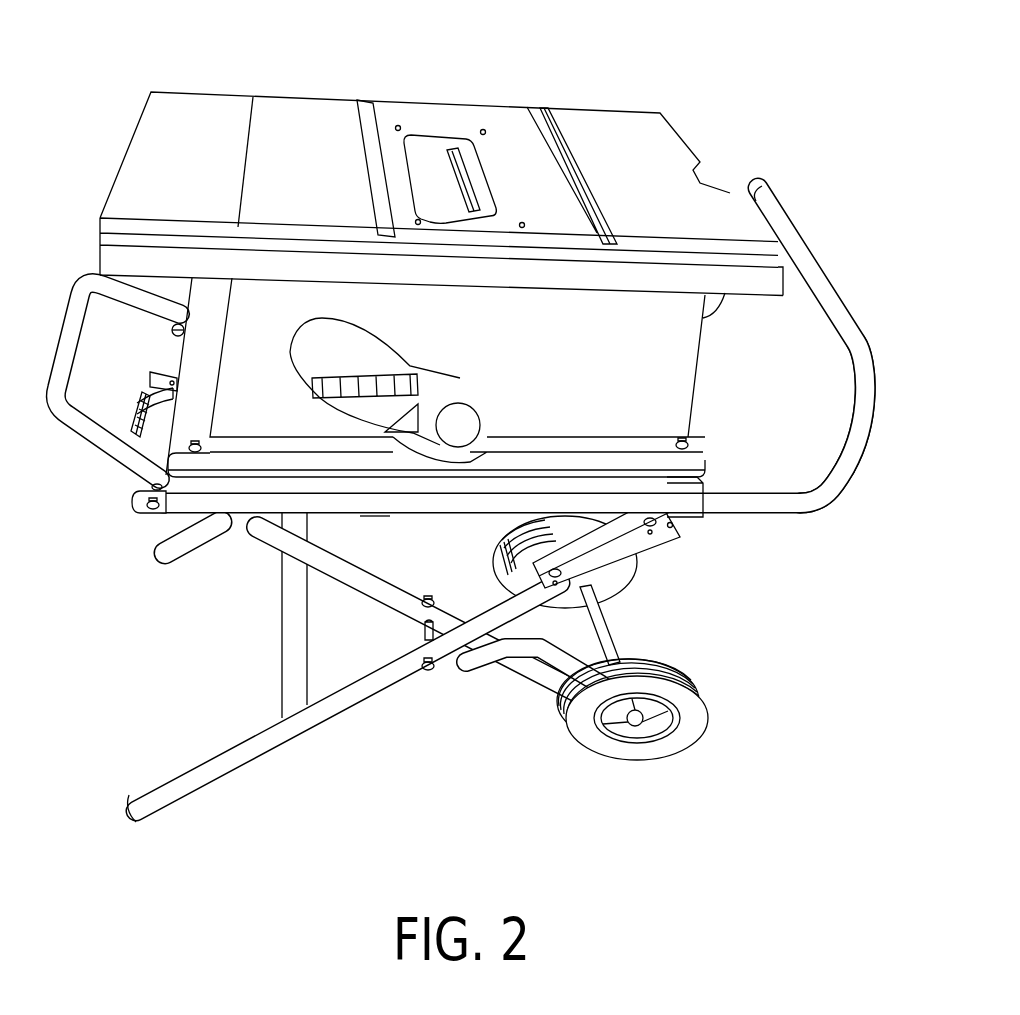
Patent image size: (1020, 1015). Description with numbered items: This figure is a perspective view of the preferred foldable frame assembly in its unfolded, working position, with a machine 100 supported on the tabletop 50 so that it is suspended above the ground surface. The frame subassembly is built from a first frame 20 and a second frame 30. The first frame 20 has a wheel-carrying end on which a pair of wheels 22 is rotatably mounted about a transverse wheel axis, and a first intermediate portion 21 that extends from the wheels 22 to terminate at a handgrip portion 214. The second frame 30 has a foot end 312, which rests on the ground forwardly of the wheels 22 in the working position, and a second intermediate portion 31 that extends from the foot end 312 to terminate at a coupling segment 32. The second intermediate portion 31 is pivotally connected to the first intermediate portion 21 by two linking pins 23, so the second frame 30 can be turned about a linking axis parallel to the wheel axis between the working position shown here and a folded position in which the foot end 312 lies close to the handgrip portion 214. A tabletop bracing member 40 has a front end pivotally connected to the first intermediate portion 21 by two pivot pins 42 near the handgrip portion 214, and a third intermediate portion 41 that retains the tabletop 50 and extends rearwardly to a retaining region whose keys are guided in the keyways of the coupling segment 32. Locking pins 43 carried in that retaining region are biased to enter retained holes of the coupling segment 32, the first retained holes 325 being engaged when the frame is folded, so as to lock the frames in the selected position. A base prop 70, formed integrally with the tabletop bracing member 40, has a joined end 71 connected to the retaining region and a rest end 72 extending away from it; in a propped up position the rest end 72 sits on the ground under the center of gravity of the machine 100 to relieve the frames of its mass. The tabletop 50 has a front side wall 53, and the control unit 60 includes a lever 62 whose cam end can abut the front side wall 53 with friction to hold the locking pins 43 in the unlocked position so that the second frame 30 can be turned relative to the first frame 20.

The machine 100 is at (620, 115).
The handgrip portion 214 is at (72, 308).
The control unit 60 is at (147, 380).
The lever 62 is at (133, 418).
The front side wall 53 is at (133, 455).
The pivot pins 42 is at (155, 514).
The first intermediate portion 21 is at (335, 570).
The tabletop 50 is at (373, 520).
The linking pins 23 is at (430, 673).
The first frame 20 is at (520, 658).
The wheels 22 is at (663, 743).
The second intermediate portion 31 is at (390, 678).
The second frame 30 is at (248, 765).
The foot end 312 is at (167, 800).
The coupling segment 32 is at (607, 547).
The first retained holes 325 is at (590, 607).
The locking pins 43 is at (683, 543).
The third intermediate portion 41 is at (717, 493).
The tabletop bracing member 40 is at (772, 487).
The base prop 70 is at (807, 217).
The joined end 71 is at (825, 493).
The rest end 72 is at (860, 403).